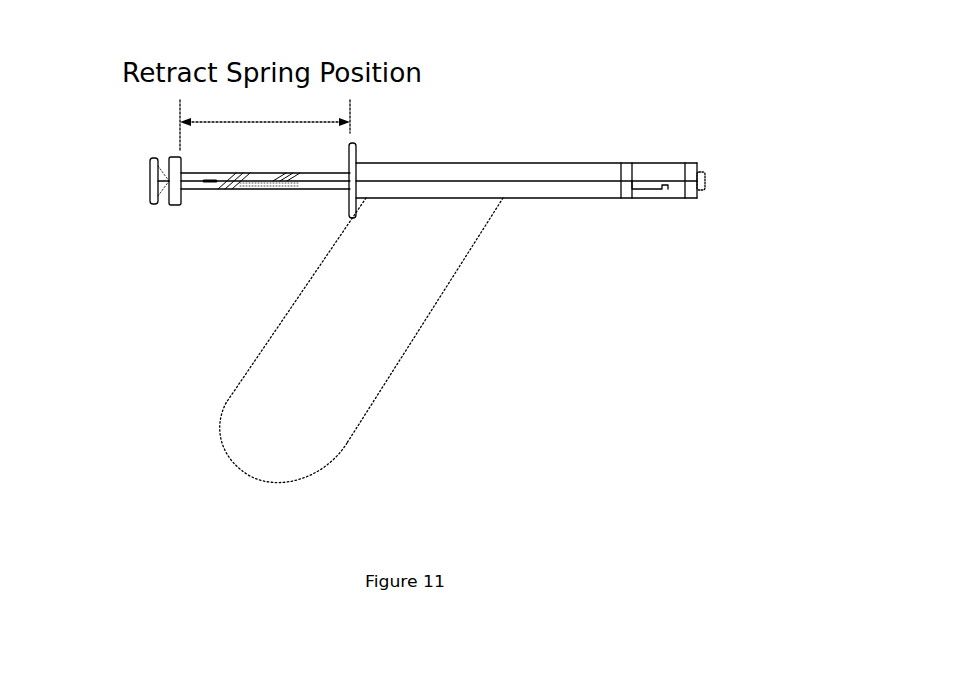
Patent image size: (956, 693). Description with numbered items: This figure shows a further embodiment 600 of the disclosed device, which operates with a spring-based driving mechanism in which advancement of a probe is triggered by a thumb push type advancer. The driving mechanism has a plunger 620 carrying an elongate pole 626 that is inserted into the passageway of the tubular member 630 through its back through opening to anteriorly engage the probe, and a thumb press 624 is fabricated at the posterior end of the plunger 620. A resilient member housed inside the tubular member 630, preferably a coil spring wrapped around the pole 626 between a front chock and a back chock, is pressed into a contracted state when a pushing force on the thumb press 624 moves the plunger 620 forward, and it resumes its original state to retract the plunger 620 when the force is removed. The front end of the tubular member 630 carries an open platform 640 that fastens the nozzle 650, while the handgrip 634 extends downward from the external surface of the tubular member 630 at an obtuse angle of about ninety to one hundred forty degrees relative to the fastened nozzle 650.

The embodiment of the disclosed device 600 is at (609, 74).
The plunger 620 is at (283, 206).
The thumb press 624 is at (153, 175).
The elongate pole 626 is at (235, 180).
The tubular member 630 is at (523, 175).
The handgrip 634 is at (285, 394).
The open platform 640 is at (635, 197).
The nozzle 650 is at (655, 175).